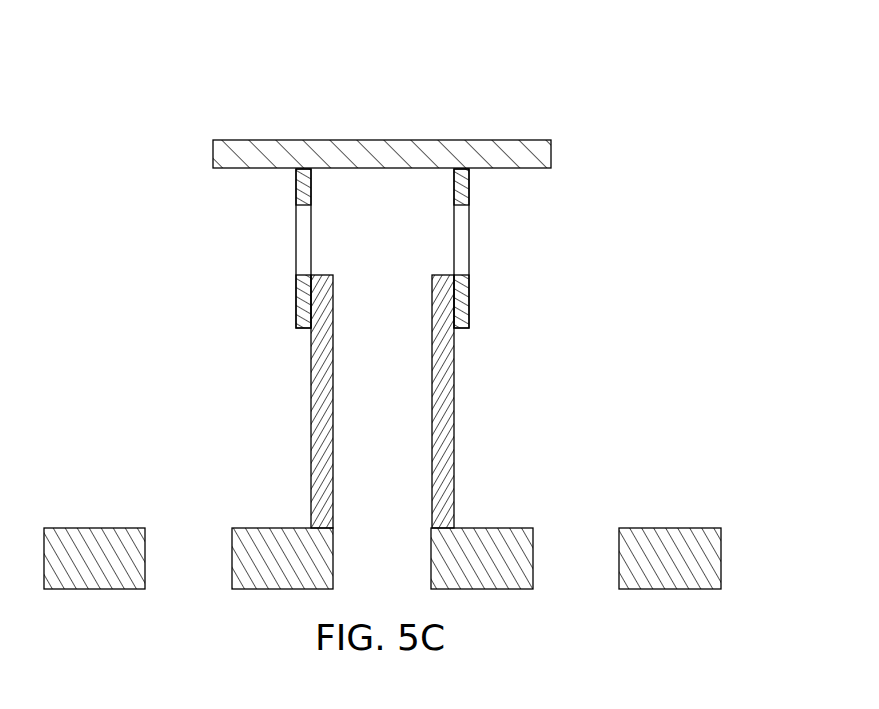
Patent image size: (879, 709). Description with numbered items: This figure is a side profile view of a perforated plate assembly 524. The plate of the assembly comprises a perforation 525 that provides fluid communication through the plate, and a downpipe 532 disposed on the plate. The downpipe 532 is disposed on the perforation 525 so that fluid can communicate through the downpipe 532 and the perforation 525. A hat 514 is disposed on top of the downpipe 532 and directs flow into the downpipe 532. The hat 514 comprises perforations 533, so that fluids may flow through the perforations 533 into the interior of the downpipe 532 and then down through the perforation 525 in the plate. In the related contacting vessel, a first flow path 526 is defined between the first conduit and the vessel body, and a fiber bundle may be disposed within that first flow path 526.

The hat 514 is at (387, 139).
The perforations 533 is at (466, 248).
The downpipe 532 is at (458, 395).
The first flow path 526 is at (485, 528).
The perforation 525 is at (583, 548).
The perforated plate assembly 524 is at (692, 168).